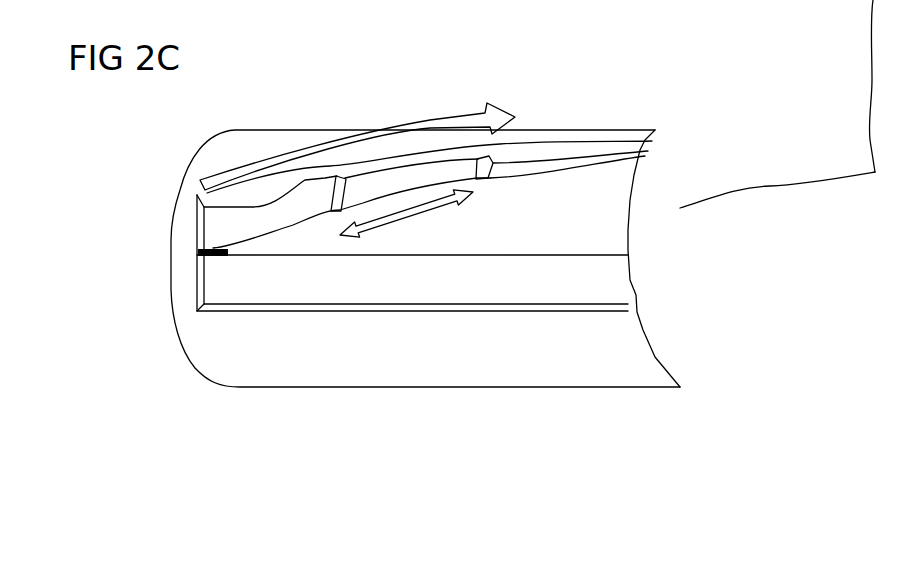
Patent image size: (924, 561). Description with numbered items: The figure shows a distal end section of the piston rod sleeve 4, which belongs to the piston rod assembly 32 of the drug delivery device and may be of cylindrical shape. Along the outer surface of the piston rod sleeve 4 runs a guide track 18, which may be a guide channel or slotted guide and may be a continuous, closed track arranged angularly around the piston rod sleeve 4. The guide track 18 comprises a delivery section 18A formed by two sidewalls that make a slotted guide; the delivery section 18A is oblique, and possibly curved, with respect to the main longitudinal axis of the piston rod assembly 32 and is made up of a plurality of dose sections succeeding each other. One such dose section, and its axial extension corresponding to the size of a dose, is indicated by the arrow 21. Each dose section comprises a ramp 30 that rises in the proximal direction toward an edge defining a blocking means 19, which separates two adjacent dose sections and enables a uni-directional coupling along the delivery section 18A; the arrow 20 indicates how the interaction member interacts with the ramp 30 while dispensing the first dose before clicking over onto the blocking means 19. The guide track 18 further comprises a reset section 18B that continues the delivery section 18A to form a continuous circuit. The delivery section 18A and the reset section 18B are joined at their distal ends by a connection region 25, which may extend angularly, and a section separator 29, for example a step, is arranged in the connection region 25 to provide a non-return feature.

The piston rod sleeve 4 is at (424, 387).
The guide track 18 is at (215, 220).
The delivery section 18A is at (636, 149).
The reset section 18B is at (618, 286).
The blocking means 19 is at (343, 211).
The arrow 20 is at (460, 120).
The arrow 21 is at (406, 213).
The connection region 25 is at (220, 284).
The section separator 29 is at (212, 228).
The ramp 30 is at (424, 180).
The piston rod assembly 32 is at (794, 104).